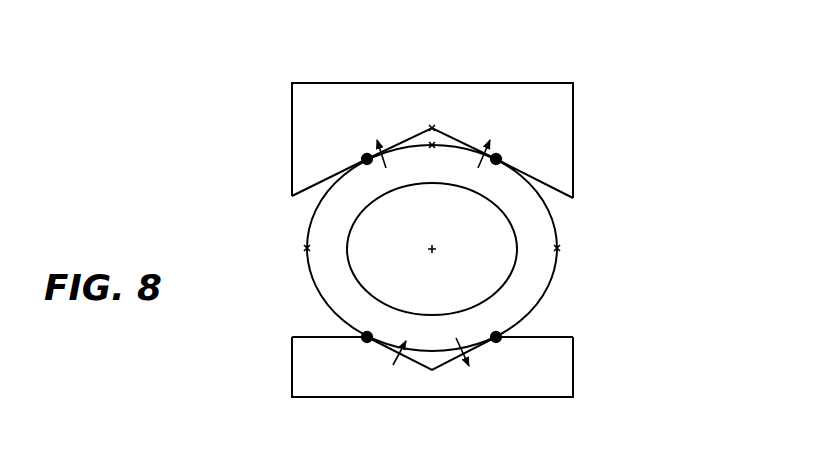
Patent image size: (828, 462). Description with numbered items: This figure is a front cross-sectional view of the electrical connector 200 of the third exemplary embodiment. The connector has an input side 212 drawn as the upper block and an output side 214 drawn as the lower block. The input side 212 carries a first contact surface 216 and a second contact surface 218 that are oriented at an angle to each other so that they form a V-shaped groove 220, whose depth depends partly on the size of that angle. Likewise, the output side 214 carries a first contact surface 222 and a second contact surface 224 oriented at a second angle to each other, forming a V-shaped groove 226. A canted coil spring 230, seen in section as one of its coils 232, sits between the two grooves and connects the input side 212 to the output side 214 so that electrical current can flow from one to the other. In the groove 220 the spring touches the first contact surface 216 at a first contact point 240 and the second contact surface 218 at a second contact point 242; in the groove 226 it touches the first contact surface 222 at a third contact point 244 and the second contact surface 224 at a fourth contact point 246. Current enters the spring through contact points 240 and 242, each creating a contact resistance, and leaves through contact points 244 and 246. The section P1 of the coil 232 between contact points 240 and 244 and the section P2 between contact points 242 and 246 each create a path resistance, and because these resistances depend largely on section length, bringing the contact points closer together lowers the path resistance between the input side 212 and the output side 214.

The electrical connector 200 is at (614, 149).
The input side 212 is at (317, 131).
The output side 214 is at (552, 367).
The first contact surface 216 is at (306, 196).
The second contact surface 218 is at (561, 199).
The V-shaped groove 220 is at (423, 163).
The first contact surface 222 is at (318, 337).
The second contact surface 224 is at (545, 337).
The V-shaped groove 226 is at (441, 332).
The canted coil spring 230 is at (296, 233).
The coils 232 is at (537, 268).
The first contact point 240 is at (367, 159).
The second contact point 242 is at (496, 159).
The third contact point 244 is at (367, 337).
The fourth contact point 246 is at (496, 337).
The section of the coil P1 is at (328, 273).
The section of the coil P2 is at (533, 233).